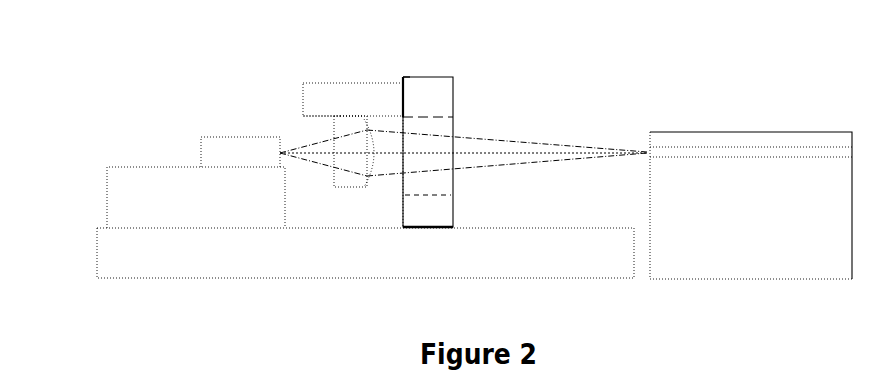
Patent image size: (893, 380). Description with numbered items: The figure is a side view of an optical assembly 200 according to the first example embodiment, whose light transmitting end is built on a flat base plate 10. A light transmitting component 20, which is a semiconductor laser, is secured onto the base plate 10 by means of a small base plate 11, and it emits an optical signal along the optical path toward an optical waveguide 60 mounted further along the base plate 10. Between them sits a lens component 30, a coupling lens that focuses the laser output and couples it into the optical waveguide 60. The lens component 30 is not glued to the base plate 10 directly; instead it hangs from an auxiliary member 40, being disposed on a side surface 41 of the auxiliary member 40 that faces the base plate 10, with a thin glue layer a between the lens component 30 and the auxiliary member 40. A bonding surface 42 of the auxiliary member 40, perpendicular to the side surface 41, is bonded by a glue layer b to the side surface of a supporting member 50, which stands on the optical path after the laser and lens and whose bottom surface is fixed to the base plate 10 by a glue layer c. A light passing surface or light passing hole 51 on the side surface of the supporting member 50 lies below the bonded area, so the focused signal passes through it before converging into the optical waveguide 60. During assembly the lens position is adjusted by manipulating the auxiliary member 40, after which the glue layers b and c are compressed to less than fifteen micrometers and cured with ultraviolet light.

The optical assembly 200 is at (97, 64).
The base plate 10 is at (171, 262).
The small base plate 11 is at (172, 178).
The light transmitting component 20 is at (238, 145).
The lens component 30 is at (348, 188).
The auxiliary member 40 is at (310, 85).
The side surface 41 is at (318, 116).
The bonding surface 42 is at (401, 93).
The supporting member 50 is at (437, 83).
The light passing surface or light passing hole 51 is at (450, 127).
The optical waveguide 60 is at (687, 141).
The glue layer a is at (352, 115).
The glue layer b is at (402, 78).
The glue layer c is at (455, 227).